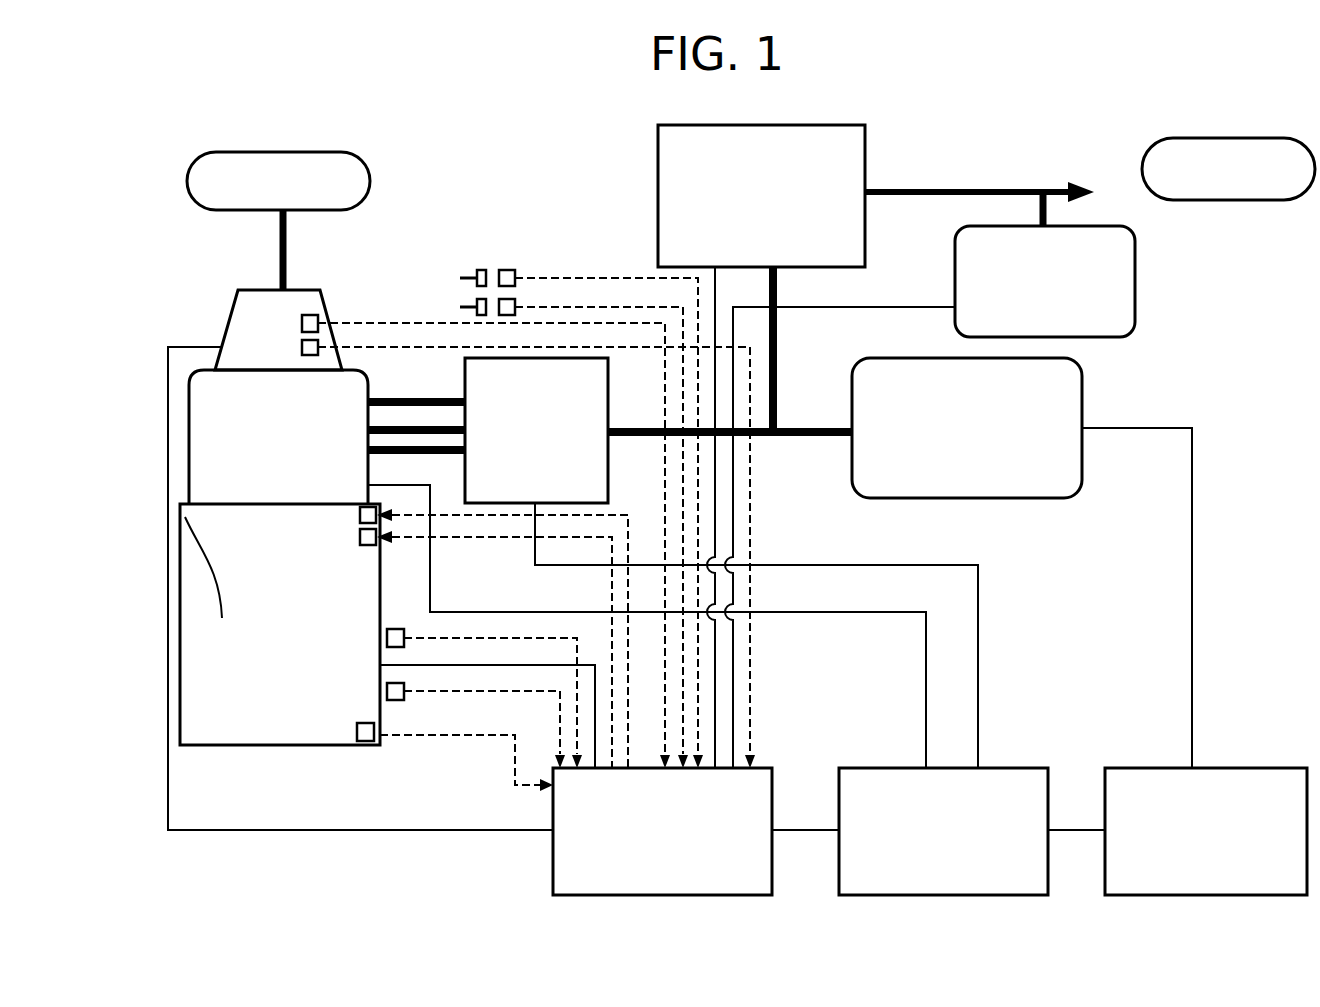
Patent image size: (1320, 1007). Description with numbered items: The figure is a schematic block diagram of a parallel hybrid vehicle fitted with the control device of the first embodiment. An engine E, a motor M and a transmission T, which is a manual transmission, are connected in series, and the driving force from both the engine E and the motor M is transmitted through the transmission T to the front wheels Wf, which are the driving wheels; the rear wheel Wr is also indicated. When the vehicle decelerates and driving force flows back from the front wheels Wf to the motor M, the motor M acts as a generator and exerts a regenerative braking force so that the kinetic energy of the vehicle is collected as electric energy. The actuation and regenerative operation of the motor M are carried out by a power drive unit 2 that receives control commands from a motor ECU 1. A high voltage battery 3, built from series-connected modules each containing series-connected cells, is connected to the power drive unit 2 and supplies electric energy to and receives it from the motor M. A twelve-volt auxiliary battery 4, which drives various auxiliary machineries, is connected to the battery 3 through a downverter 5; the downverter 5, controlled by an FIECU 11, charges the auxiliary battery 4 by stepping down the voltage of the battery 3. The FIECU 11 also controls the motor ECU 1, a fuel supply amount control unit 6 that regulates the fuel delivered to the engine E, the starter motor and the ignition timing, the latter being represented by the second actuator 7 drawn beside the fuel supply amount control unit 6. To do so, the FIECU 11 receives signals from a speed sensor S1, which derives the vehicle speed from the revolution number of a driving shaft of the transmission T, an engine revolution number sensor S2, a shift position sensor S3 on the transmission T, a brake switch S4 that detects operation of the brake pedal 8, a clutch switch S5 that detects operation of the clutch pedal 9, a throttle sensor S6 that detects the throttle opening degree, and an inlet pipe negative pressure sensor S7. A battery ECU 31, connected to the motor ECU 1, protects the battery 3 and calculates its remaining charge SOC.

The front wheels Wf is at (312, 152).
The rear wheel Wr is at (1266, 200).
The transmission T is at (290, 346).
The motor M is at (291, 445).
The engine E is at (293, 636).
The power drive unit 2 is at (546, 445).
The battery 3 is at (961, 443).
The auxiliary battery 4 is at (1032, 295).
The downverter 5 is at (769, 212).
The FIECU 11 is at (654, 848).
The motor ECU 1 is at (953, 848).
The battery ECU 31 is at (1186, 848).
The speed sensor S1 is at (320, 353).
The engine revolution number sensor S2 is at (357, 728).
The shift position sensor S3 is at (312, 314).
The brake switch S4 is at (516, 277).
The clutch switch S5 is at (516, 303).
The throttle sensor S6 is at (403, 700).
The inlet pipe negative pressure sensor S7 is at (394, 629).
The fuel supply amount control unit 6 is at (360, 513).
The ignition control device 7 is at (360, 538).
The brake pedal 8 is at (483, 270).
The clutch pedal 9 is at (477, 306).